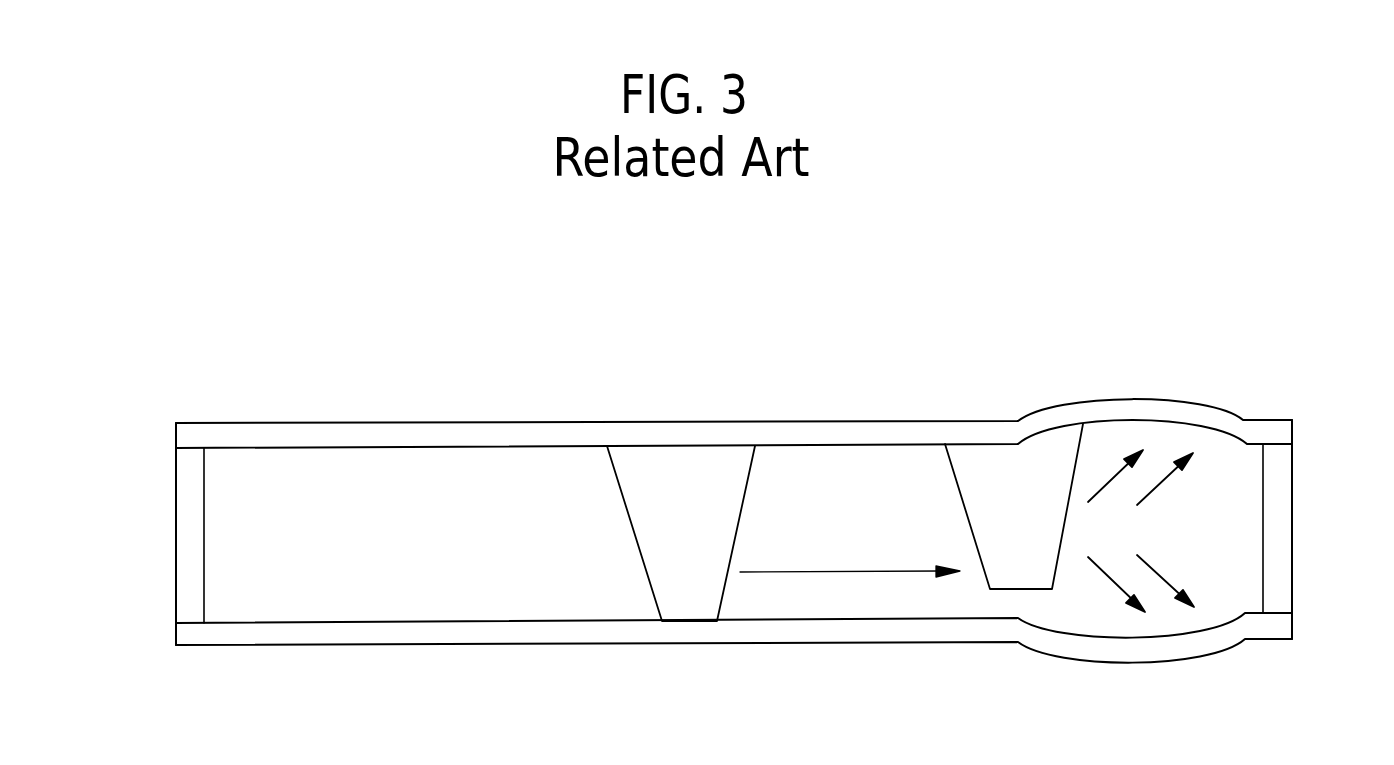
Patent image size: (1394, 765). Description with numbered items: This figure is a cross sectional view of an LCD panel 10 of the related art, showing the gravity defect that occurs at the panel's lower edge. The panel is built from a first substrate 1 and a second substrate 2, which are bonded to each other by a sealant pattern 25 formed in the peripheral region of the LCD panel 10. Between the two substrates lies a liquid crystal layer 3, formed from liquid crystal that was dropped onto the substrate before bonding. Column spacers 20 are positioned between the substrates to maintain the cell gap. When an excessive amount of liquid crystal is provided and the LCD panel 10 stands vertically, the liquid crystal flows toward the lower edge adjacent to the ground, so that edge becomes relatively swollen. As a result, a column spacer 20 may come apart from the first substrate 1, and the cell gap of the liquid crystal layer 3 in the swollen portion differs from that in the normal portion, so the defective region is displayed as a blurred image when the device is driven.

The LCD panel 10 is at (659, 531).
The second substrate 2 is at (185, 438).
The first substrate 1 is at (693, 638).
The liquid crystal layer 3 is at (493, 468).
The column spacer 20 is at (696, 468).
The sealant pattern 25 is at (1277, 482).